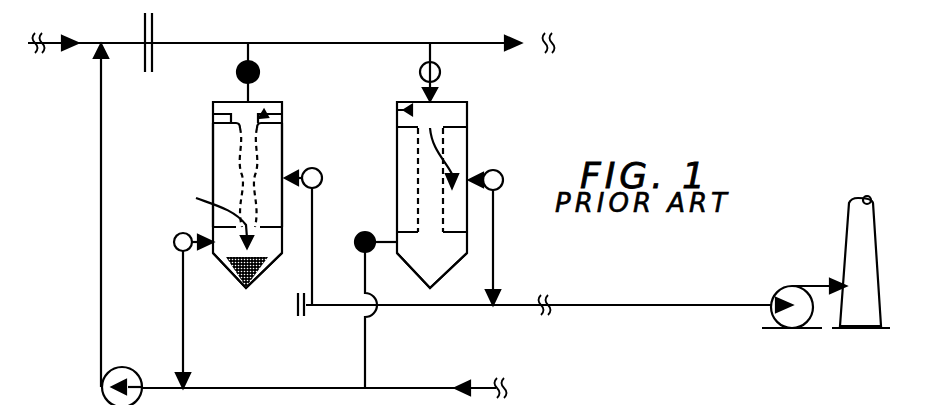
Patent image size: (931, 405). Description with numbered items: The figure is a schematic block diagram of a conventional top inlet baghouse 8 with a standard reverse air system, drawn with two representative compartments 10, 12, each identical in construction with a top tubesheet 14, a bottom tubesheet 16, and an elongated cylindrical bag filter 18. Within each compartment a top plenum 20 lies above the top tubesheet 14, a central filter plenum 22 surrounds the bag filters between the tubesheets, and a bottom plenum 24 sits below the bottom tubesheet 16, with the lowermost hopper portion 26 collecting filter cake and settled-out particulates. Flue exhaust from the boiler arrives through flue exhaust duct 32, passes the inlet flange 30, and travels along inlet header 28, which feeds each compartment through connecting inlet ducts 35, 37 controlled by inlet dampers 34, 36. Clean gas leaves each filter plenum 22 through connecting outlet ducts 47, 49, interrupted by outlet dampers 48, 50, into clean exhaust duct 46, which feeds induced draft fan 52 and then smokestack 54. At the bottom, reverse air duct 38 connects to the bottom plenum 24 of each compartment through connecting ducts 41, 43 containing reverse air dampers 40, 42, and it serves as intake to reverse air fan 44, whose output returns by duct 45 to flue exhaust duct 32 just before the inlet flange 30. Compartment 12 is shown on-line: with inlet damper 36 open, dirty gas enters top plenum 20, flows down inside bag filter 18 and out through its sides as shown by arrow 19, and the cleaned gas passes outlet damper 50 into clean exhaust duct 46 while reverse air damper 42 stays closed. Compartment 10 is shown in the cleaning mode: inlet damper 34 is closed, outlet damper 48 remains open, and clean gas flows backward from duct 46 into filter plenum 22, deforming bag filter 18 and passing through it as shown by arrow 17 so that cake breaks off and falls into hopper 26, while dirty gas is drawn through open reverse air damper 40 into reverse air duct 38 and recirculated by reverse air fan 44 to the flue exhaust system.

The top inlet baghouse 8 is at (438, 35).
The compartment 10 is at (270, 104).
The compartment 12 is at (452, 103).
The top tubesheet 14 is at (212, 114).
The bottom tubesheet 16 is at (214, 232).
The arrow 17 is at (198, 199).
The elongated cylindrical bag filter 18 is at (230, 150).
The arrow 19 is at (462, 166).
The top plenum 20 is at (267, 114).
The central filter plenum 22 is at (232, 150).
The bottom plenum 24 is at (270, 242).
The hopper portion 26 is at (241, 284).
The inlet header 28 is at (346, 42).
The inlet flange 30 is at (154, 30).
The flue exhaust duct 32 is at (84, 42).
The inlet damper 34 is at (237, 72).
The connecting inlet duct 35 is at (252, 47).
The inlet damper 36 is at (420, 68).
The connecting inlet duct 37 is at (434, 48).
The reverse air duct 38 is at (214, 388).
The reverse air damper 40 is at (173, 245).
The connecting duct 41 is at (182, 290).
The reverse air damper 42 is at (371, 232).
The connecting duct 43 is at (364, 280).
The reverse air fan 44 is at (166, 354).
The duct 45 is at (99, 138).
The clean exhaust duct 46 is at (401, 308).
The connecting outlet duct 47 is at (312, 270).
The outlet damper 48 is at (326, 163).
The connecting outlet duct 49 is at (495, 242).
The outlet damper 50 is at (503, 180).
The induced draft fan 52 is at (791, 284).
The smokestack 54 is at (846, 237).